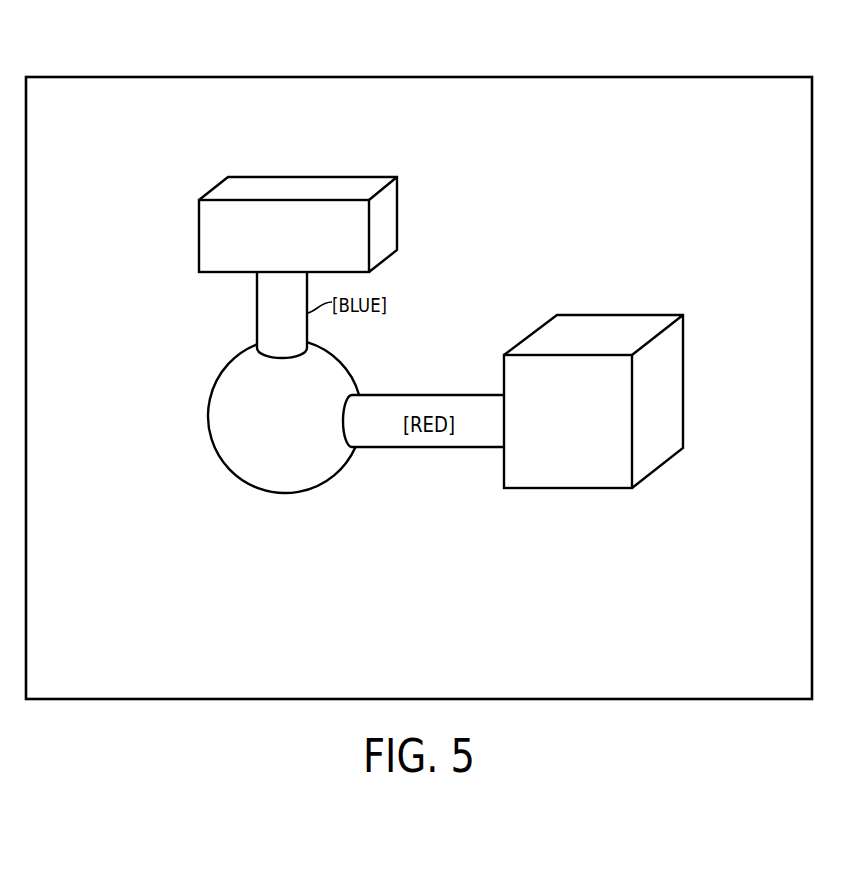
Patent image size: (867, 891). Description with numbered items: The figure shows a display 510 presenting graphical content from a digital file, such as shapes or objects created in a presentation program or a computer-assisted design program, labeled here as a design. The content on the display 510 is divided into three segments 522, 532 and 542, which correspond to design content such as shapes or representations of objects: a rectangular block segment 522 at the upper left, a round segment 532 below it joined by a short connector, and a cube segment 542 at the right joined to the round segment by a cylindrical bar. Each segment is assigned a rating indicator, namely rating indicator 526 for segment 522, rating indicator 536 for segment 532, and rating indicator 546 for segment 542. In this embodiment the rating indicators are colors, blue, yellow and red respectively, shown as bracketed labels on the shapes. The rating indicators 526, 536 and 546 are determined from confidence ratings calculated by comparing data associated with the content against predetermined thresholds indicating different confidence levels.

The display 510 is at (472, 77).
The segment 522 is at (323, 224).
The rating indicator 526 is at (230, 239).
The segment 532 is at (248, 428).
The rating indicator 536 is at (229, 420).
The segment 542 is at (593, 449).
The rating indicator 546 is at (578, 456).